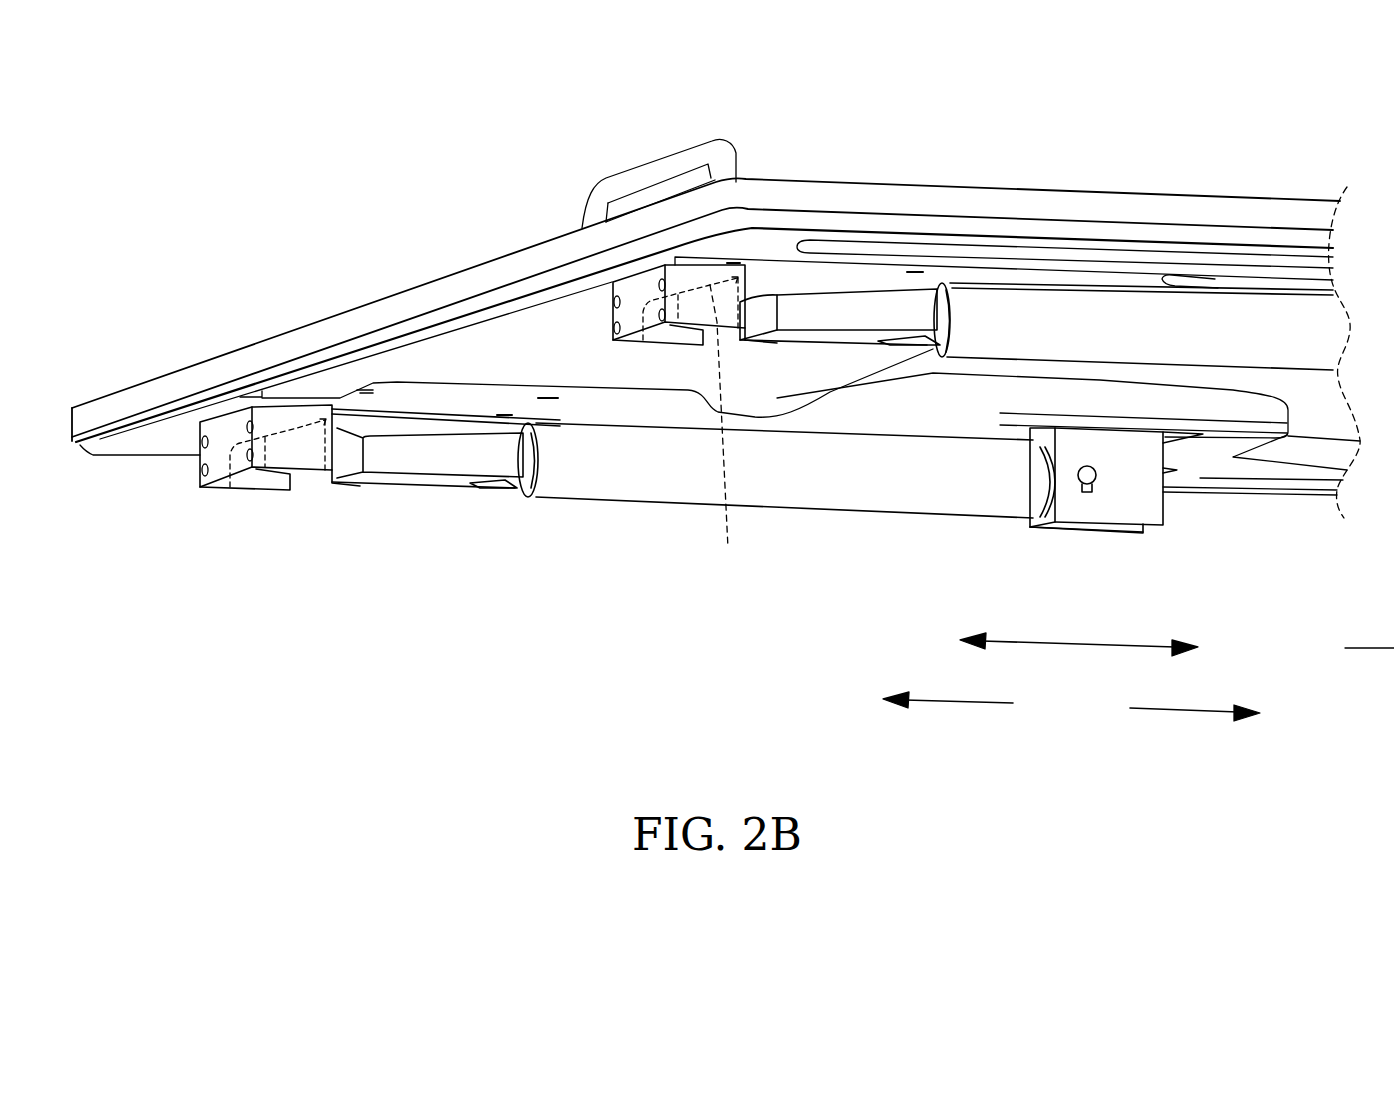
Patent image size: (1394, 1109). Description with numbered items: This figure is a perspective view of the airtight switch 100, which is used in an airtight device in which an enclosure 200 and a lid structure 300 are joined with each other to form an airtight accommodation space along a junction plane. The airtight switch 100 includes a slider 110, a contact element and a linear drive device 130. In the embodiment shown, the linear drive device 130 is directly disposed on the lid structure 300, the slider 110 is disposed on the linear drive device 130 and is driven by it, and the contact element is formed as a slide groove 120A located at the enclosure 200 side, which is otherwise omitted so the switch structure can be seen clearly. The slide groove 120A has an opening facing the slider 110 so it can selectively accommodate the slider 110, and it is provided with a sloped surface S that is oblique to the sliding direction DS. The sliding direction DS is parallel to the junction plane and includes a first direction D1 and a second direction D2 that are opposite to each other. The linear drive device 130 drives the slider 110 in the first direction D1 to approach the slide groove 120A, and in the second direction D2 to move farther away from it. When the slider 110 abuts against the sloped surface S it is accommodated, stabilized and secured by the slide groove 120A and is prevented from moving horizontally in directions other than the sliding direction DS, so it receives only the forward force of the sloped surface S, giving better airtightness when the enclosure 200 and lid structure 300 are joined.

The lid structure 300 is at (1002, 188).
The linear drive device 130 is at (1206, 323).
The slide groove 120A is at (636, 290).
The airtight switch 100 is at (830, 537).
The slider 110 is at (868, 307).
The sloped surface S is at (722, 436).
The sliding direction DS is at (1079, 634).
The first direction D1 is at (948, 688).
The second direction D2 is at (1195, 698).
The enclosure 200 is at (1369, 632).